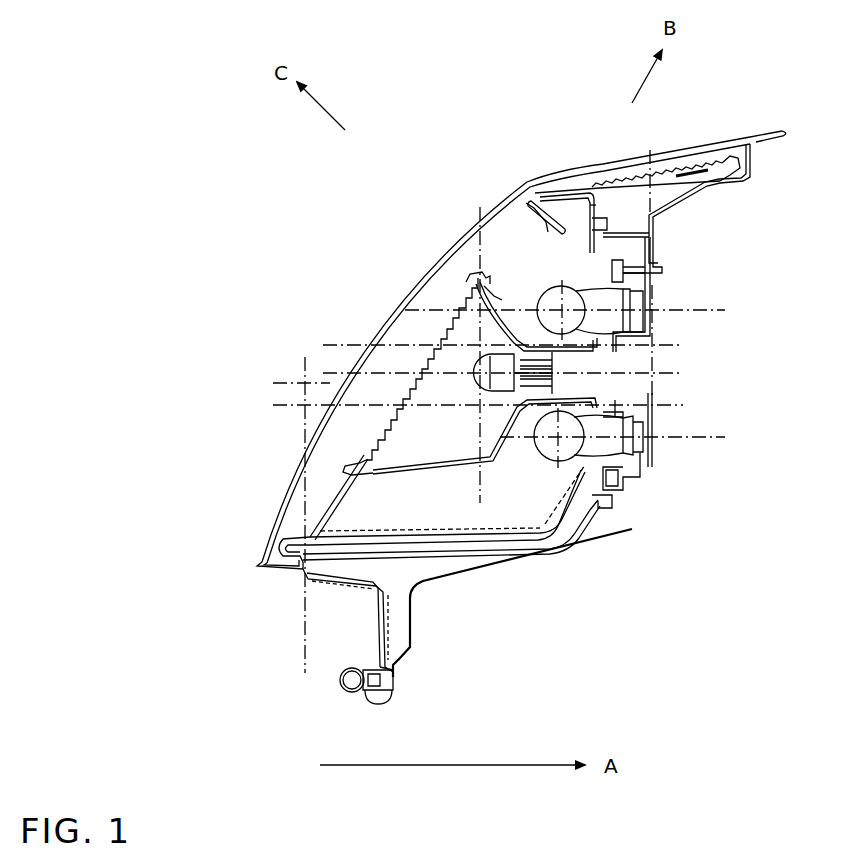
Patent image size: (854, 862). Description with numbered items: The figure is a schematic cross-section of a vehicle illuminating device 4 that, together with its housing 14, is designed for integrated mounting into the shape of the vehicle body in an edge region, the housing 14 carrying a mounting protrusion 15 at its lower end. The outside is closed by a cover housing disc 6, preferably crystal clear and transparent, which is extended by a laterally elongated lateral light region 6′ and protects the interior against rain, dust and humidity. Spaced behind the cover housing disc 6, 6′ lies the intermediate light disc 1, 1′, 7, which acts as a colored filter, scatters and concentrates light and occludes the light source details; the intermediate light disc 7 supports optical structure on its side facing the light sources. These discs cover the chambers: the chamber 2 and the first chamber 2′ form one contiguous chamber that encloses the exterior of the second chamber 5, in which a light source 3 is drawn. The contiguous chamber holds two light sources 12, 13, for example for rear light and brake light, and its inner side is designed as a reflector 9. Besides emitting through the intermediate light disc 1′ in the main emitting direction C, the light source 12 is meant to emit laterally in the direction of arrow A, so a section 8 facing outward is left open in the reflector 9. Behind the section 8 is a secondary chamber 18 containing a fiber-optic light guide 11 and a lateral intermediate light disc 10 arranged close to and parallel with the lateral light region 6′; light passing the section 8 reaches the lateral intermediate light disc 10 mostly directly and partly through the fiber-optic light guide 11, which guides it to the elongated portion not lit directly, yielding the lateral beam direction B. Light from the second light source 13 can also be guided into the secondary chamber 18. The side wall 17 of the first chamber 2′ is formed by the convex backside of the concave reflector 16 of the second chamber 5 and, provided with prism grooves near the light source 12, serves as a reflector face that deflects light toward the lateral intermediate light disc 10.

The intermediate light disc 1 is at (318, 516).
The intermediate light disc 1′ is at (577, 233).
The chamber 2 is at (353, 500).
The first chamber 2′ is at (520, 270).
The light source 3 is at (475, 365).
The vehicle illuminating device 4 is at (272, 407).
The second chamber 5 is at (422, 434).
The cover housing disc 6 is at (378, 336).
The lateral light region 6′ is at (599, 165).
The intermediate light disc 7 is at (442, 327).
The section 8 is at (518, 223).
The reflector 9 is at (547, 217).
The lateral intermediate light disc 10 is at (668, 170).
The fiber-optic light guide 11 is at (713, 173).
The light source 12 is at (580, 301).
The light source 13 is at (580, 428).
The housing 14 is at (600, 543).
The mounting protrusion 15 is at (408, 652).
The reflector 16 is at (420, 462).
The side wall 17 is at (498, 300).
The secondary chamber 18 is at (575, 200).